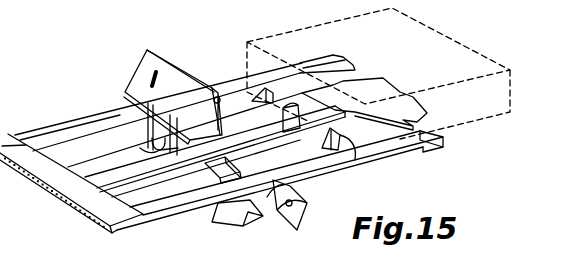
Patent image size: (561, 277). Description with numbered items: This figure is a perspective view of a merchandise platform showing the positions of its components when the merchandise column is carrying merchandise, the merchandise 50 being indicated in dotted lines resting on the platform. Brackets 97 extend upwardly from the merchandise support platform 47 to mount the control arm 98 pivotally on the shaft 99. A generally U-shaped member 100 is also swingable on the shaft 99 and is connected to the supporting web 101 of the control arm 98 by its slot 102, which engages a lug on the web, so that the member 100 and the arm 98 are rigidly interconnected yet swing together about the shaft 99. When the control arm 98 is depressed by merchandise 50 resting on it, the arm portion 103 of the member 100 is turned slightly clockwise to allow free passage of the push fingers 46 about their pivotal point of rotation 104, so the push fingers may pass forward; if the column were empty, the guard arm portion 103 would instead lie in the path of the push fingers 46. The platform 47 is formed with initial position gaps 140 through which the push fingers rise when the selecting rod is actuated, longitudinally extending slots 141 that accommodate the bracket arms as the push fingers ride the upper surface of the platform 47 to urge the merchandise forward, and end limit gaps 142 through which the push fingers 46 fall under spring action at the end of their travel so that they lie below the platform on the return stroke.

The push fingers 46 is at (263, 87).
The merchandise support platform 47 is at (370, 87).
The merchandise 50 is at (452, 35).
The brackets 97 is at (160, 172).
The control arm 98 is at (282, 70).
The shaft 99 is at (218, 96).
The U-shaped member 100 is at (173, 70).
The supporting web 101 is at (133, 115).
The slot 102 is at (150, 78).
The arm portion 103 is at (221, 118).
The pivotal point of rotation 104 is at (293, 203).
The initial position gaps 140 is at (221, 203).
The longitudinally extending slots 141 is at (258, 214).
The end limit gaps 142 is at (425, 142).